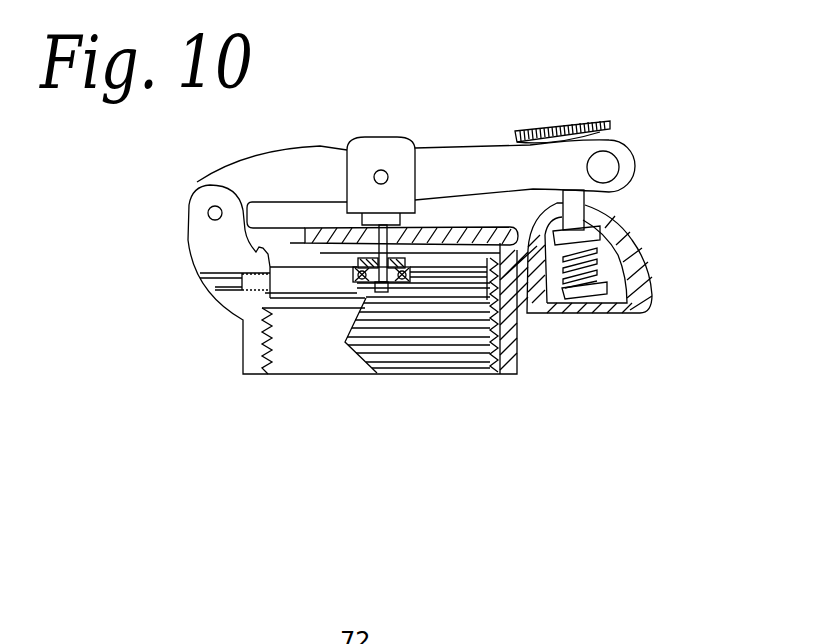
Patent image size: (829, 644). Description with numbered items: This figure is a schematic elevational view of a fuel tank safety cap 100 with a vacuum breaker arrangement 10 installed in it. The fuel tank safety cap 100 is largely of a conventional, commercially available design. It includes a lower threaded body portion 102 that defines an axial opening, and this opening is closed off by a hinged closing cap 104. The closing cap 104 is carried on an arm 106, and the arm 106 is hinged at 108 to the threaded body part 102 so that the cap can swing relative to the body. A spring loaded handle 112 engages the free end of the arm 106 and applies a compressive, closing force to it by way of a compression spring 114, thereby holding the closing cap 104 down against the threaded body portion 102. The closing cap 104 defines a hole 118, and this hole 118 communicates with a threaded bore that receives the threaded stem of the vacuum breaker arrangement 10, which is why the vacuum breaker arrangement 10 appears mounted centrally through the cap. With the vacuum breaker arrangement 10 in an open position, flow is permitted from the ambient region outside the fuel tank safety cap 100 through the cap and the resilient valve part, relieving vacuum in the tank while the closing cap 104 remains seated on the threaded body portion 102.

The vacuum breaker arrangement 10 is at (305, 232).
The fuel tank safety cap 100 is at (359, 153).
The lower threaded body portion 102 is at (410, 348).
The closing cap 104 is at (472, 225).
The arm 106 is at (436, 157).
The hinge 108 is at (208, 215).
The spring loaded handle 112 is at (590, 122).
The compression spring 114 is at (598, 274).
The hole 118 is at (383, 232).